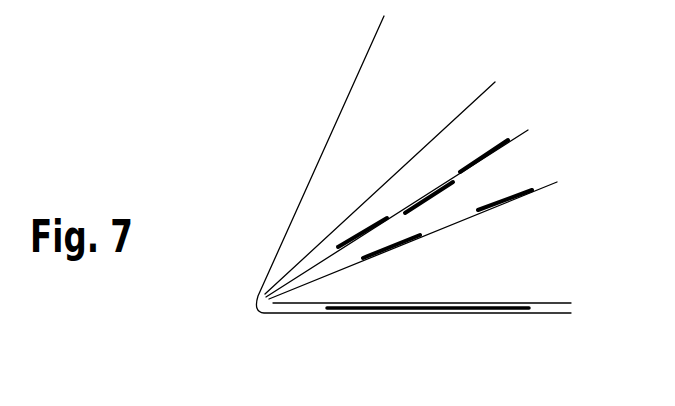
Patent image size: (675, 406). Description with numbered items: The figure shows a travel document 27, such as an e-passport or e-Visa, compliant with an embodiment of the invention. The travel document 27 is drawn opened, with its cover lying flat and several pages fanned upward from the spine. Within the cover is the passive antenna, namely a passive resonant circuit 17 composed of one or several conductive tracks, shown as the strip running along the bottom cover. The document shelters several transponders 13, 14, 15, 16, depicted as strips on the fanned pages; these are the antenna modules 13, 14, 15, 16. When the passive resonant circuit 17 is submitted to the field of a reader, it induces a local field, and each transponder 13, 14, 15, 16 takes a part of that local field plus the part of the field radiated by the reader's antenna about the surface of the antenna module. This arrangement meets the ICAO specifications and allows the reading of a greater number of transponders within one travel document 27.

The travel document 27 is at (283, 180).
The transponder 13 is at (485, 152).
The transponder 14 is at (503, 199).
The transponder 15 is at (417, 206).
The transponder 16 is at (354, 236).
The passive resonant circuit 17 is at (508, 312).